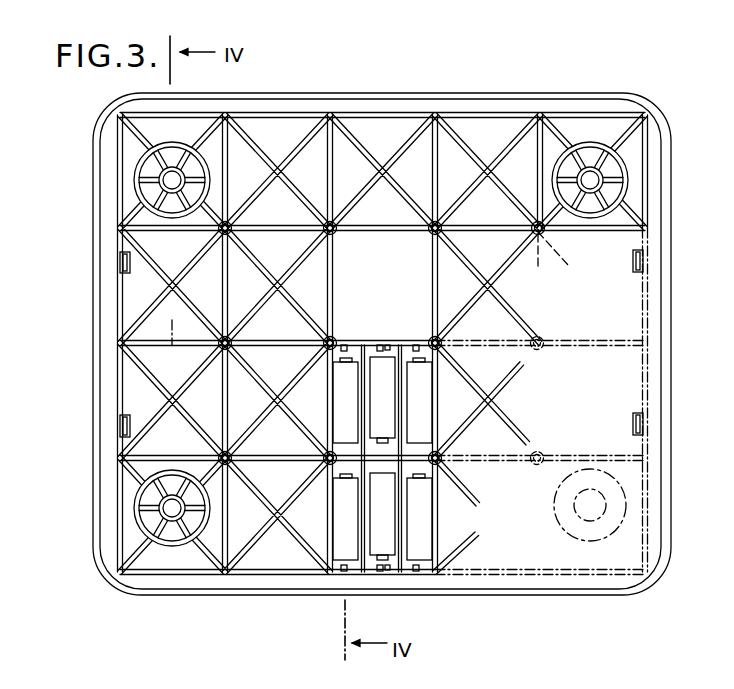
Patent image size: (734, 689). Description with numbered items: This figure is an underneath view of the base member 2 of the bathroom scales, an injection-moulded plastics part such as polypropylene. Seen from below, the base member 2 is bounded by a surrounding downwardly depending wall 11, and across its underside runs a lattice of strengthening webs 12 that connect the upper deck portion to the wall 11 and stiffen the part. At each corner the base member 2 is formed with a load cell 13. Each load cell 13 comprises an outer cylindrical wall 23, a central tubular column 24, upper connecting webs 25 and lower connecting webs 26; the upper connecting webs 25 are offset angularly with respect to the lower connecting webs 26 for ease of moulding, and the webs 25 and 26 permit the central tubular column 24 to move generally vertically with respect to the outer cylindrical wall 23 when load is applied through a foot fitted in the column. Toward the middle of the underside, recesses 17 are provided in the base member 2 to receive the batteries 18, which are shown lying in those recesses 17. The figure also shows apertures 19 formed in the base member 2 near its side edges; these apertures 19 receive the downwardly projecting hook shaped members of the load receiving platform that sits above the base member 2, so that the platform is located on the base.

The base member 2 is at (560, 70).
The downwardly depending wall 11 is at (665, 325).
The strengthening webs 12 is at (408, 140).
The load cell 13 is at (157, 162).
The recesses 17 is at (325, 455).
The batteries 18 is at (383, 543).
The apertures 19 is at (118, 262).
The outer cylindrical wall 23 is at (155, 176).
The central tubular column 24 is at (165, 193).
The upper connecting webs 25 is at (160, 487).
The lower connecting webs 26 is at (188, 200).